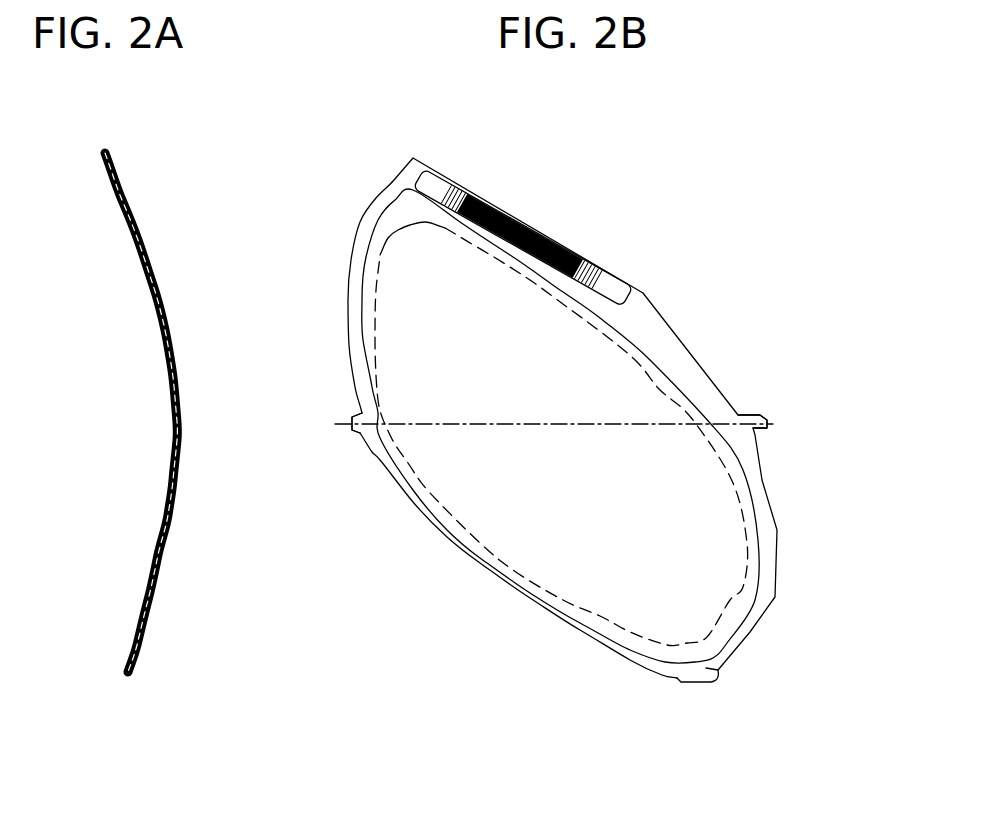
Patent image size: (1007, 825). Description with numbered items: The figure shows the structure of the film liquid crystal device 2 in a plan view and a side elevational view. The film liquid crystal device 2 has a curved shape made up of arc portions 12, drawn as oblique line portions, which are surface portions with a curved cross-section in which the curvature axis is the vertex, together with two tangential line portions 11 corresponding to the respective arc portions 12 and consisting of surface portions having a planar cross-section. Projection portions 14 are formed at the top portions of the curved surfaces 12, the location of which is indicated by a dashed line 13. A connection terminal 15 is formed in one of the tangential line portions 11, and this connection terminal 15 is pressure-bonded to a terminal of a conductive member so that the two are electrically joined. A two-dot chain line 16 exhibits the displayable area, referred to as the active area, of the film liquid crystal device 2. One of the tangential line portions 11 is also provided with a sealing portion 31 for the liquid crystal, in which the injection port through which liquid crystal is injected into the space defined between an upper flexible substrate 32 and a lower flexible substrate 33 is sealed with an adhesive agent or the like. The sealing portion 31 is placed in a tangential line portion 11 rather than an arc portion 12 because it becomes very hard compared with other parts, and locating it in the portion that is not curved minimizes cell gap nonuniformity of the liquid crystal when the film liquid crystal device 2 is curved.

In FIG. 2A, the film liquid crystal device 2 is at (49, 217).
In FIG. 2B, the film liquid crystal device 2 is at (660, 347).
In FIG. 2B, the tangential line portion 11 is at (397, 191).
In FIG. 2B, the arc portion 12 is at (349, 287).
In FIG. 2B, the dashed line 13 is at (540, 423).
In FIG. 2A, the projection portion 14 is at (183, 424).
In FIG. 2B, the projection portion 14 is at (356, 435).
In FIG. 2B, the connection terminal 15 is at (500, 207).
In FIG. 2B, the two-dot chain line 16 is at (377, 367).
In FIG. 2B, the sealing portion 31 is at (690, 683).
In FIG. 2A, the upper flexible substrate 32 is at (142, 238).
In FIG. 2A, the lower flexible substrate 33 is at (145, 255).